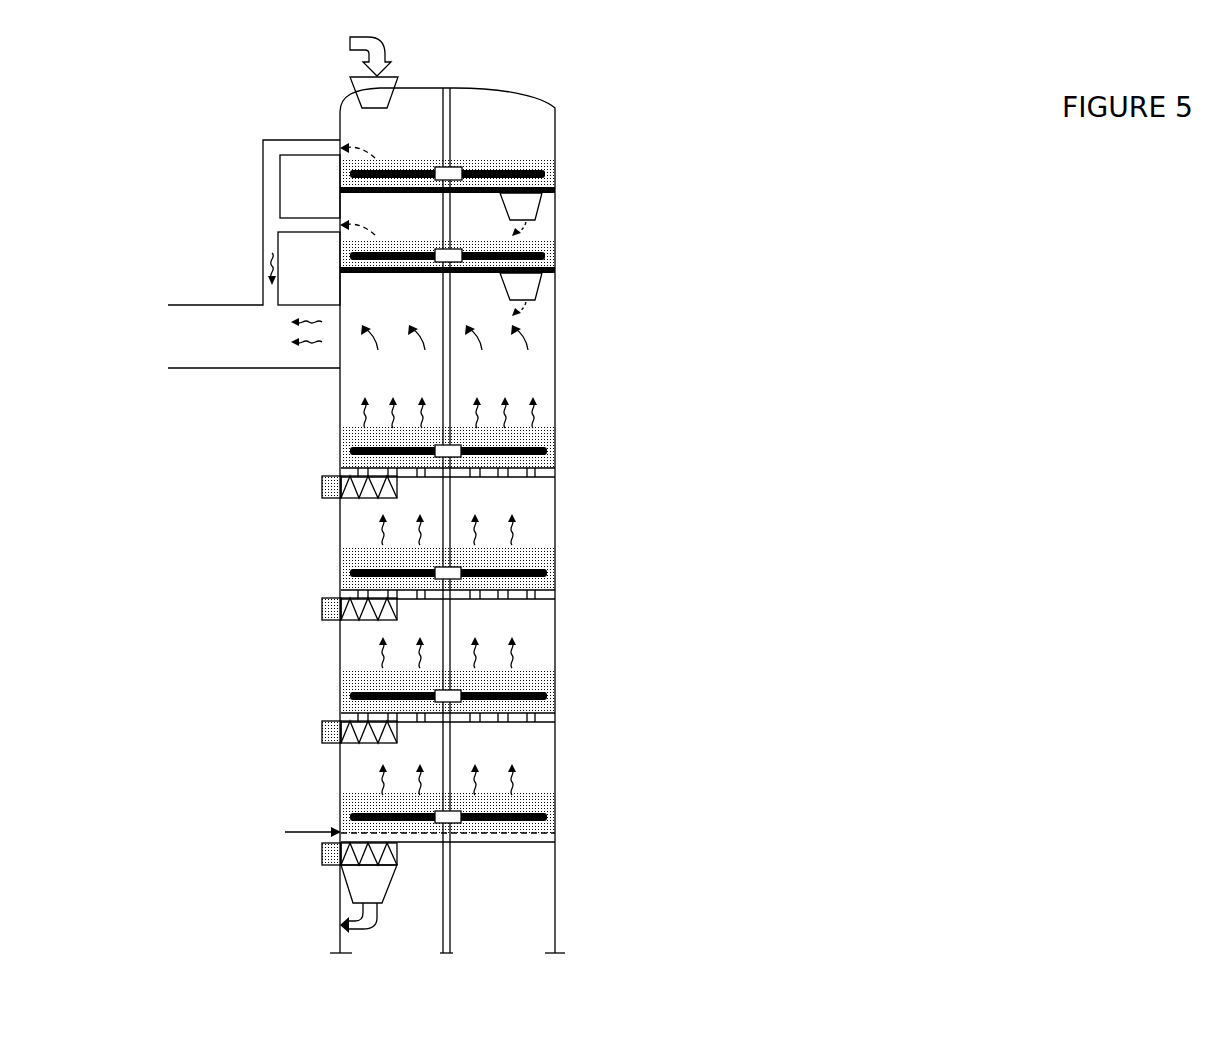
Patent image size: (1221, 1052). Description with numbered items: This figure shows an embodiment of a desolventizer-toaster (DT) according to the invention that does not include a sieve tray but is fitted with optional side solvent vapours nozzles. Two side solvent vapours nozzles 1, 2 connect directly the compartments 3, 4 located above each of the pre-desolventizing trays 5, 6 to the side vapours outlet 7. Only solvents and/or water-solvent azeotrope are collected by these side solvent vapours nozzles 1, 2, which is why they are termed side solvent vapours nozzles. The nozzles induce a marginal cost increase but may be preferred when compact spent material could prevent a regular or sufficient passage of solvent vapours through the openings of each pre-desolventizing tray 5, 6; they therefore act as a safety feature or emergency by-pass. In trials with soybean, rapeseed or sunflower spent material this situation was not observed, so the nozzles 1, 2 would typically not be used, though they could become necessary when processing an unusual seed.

The side solvent vapours nozzle 1 is at (303, 147).
The side solvent vapours nozzle 2 is at (303, 228).
The compartment 3 is at (507, 125).
The compartment 4 is at (547, 220).
The pre-desolventizing tray 5 is at (555, 185).
The pre-desolventizing tray 6 is at (555, 270).
The side vapours outlet 7 is at (257, 352).